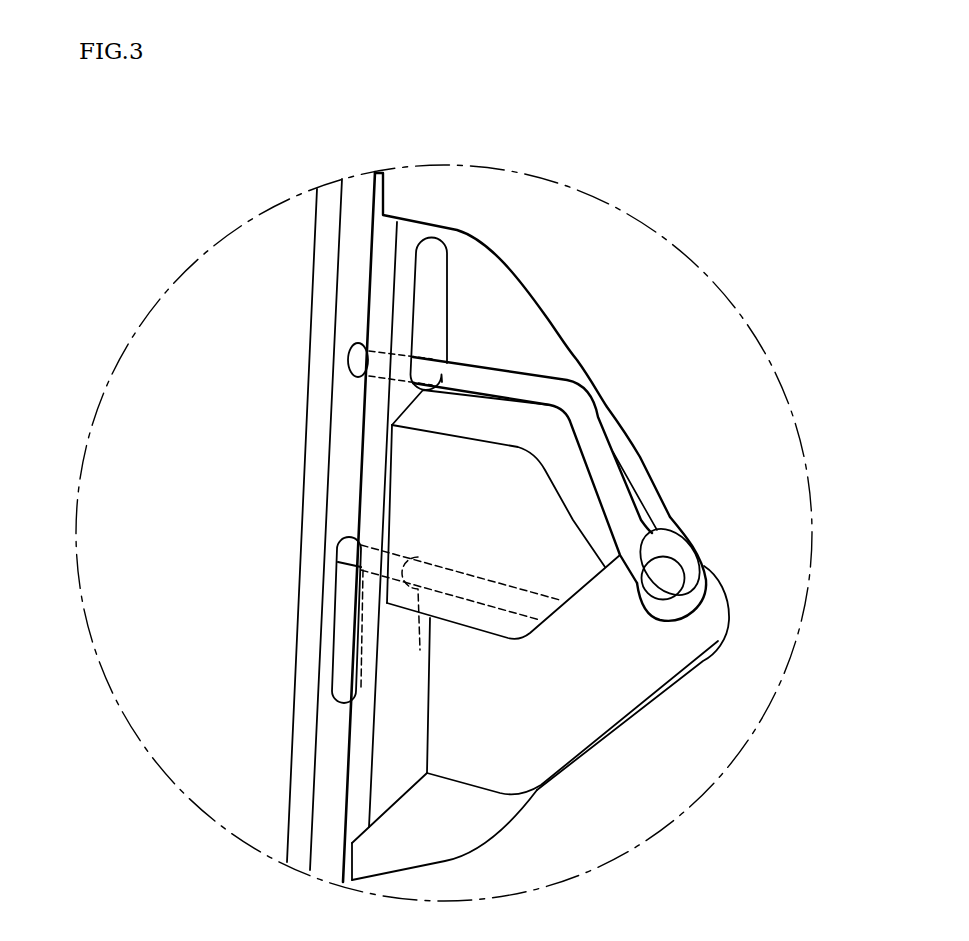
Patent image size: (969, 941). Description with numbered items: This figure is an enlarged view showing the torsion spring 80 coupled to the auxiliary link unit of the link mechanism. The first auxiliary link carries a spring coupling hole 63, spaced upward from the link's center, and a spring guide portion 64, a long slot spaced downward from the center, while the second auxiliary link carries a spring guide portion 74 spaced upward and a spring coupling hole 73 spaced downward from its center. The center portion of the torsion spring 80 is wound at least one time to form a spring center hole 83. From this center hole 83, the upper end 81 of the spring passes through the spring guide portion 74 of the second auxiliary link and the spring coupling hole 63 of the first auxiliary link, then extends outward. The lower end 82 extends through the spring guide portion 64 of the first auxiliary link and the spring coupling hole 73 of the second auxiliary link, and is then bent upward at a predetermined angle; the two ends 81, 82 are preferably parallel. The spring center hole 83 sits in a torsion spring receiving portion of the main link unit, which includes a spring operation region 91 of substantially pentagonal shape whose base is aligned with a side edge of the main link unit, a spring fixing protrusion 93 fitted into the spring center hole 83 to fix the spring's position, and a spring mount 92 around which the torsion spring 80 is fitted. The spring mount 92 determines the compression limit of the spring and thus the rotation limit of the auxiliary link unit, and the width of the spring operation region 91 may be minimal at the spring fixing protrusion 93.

The spring coupling hole 63 is at (367, 342).
The spring guide portion 64 is at (348, 636).
The spring coupling hole 73 is at (420, 650).
The spring guide portion 74 is at (433, 258).
The torsion spring 80 is at (613, 472).
The upper end 81 is at (356, 372).
The lower end 82 is at (347, 553).
The spring center hole 83 is at (707, 575).
The spring operation region 91 is at (490, 303).
The spring mount 92 is at (483, 490).
The spring fixing protrusion 93 is at (665, 580).